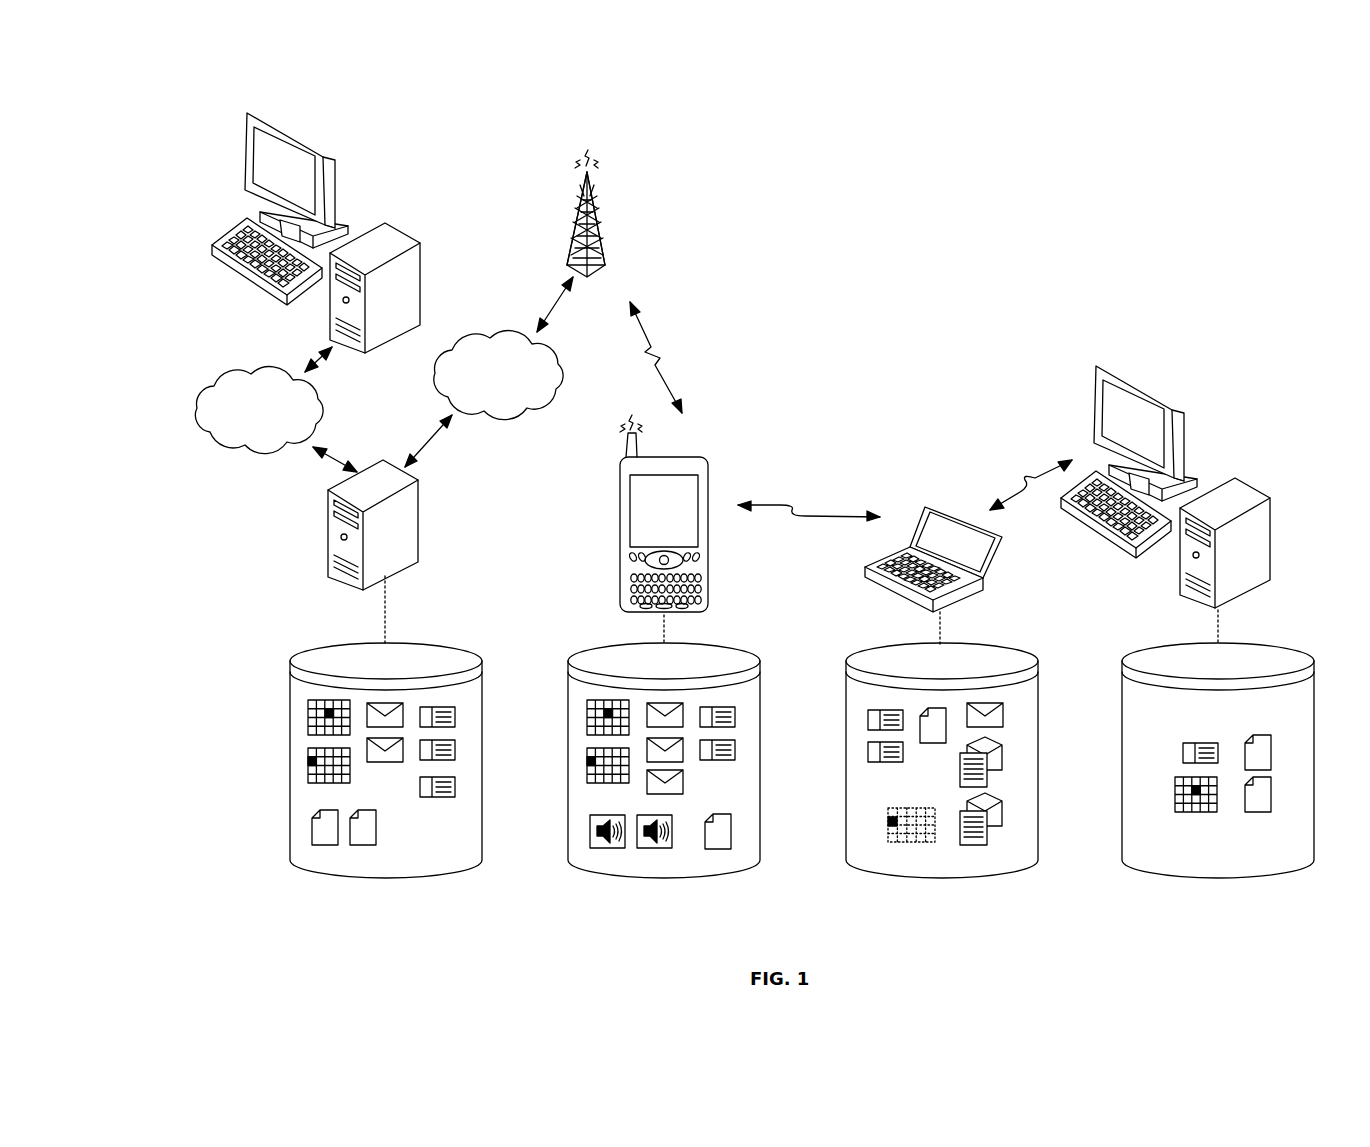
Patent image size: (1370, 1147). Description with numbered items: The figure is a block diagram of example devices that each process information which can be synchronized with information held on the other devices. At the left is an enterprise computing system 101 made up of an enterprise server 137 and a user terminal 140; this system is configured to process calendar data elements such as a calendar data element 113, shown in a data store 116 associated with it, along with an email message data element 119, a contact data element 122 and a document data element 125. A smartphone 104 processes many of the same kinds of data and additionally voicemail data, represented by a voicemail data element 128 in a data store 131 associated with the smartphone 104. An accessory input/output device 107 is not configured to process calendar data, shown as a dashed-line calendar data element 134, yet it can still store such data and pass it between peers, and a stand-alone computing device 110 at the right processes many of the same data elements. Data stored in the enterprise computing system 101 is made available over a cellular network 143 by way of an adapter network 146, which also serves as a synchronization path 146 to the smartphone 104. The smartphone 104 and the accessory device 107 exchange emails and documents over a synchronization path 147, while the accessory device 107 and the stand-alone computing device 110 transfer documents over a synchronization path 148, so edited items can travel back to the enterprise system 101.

The enterprise computing system 101 is at (391, 182).
The smartphone 104 is at (620, 537).
The accessory input/output (I/O) device 107 is at (865, 572).
The stand-alone computing device 110 is at (1180, 570).
The calendar data element 113 is at (308, 708).
The data store 116 is at (353, 783).
The email message data element 119 is at (372, 762).
The contact data element 122 is at (445, 797).
The document data element 125 is at (312, 820).
The voicemail data element 128 is at (592, 829).
The data store 131 is at (632, 783).
The dashed-line calendar data element 134 is at (896, 845).
The enterprise server 137 is at (328, 540).
The user terminal 140 is at (330, 318).
The cellular network 143 is at (625, 145).
The adapter network / synchronization path 146 is at (500, 425).
The synchronization path 147 is at (796, 507).
The synchronization path 148 is at (1030, 485).